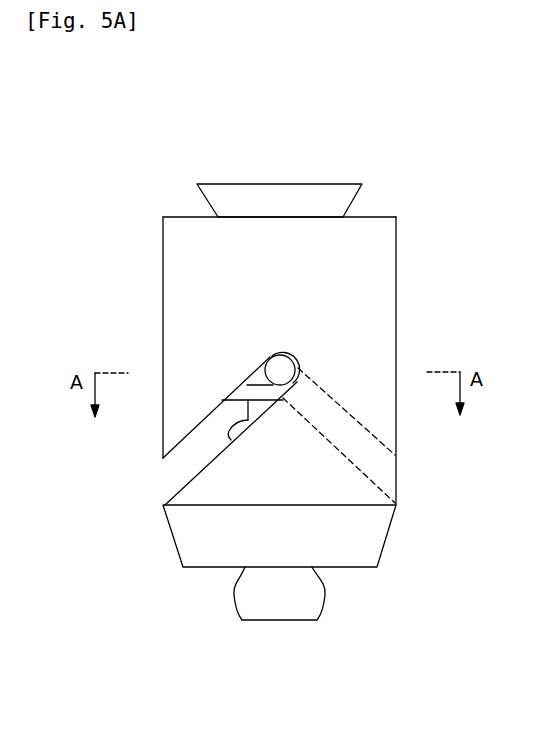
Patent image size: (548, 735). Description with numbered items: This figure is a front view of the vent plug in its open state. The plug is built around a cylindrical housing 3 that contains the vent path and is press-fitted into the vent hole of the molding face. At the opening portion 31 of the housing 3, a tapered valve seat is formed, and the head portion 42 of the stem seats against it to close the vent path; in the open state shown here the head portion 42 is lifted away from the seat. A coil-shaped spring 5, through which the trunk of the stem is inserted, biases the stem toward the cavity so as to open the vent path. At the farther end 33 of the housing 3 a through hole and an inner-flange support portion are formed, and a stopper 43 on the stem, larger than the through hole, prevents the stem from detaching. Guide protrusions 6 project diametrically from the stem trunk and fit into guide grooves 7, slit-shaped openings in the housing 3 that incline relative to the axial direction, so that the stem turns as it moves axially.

The housing 3 is at (387, 312).
The opening portion 31 is at (178, 243).
The head portion 42 is at (313, 195).
The farther end 33 is at (178, 555).
The stopper 43 is at (267, 620).
The guide grooves 7 is at (178, 486).
The guide protrusions 6 is at (270, 357).
The spring 5 is at (232, 425).